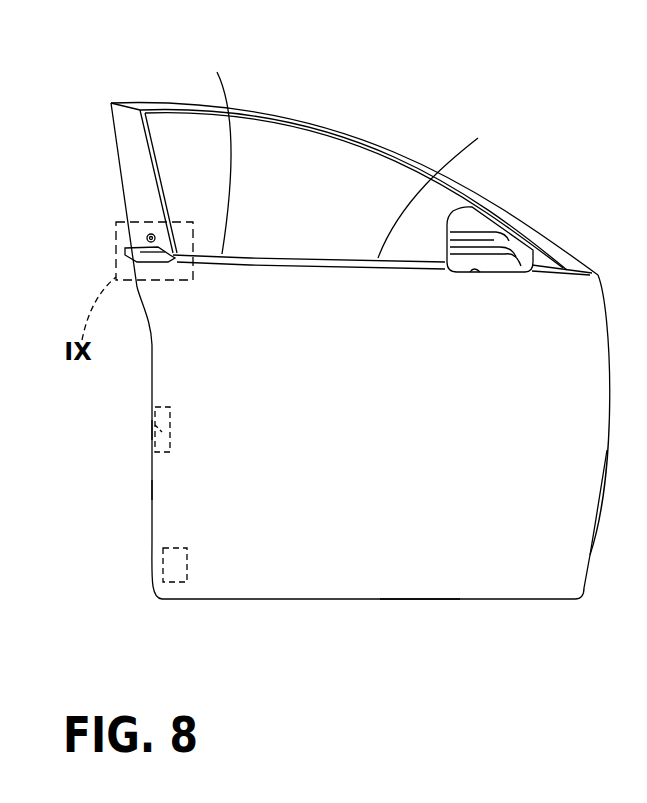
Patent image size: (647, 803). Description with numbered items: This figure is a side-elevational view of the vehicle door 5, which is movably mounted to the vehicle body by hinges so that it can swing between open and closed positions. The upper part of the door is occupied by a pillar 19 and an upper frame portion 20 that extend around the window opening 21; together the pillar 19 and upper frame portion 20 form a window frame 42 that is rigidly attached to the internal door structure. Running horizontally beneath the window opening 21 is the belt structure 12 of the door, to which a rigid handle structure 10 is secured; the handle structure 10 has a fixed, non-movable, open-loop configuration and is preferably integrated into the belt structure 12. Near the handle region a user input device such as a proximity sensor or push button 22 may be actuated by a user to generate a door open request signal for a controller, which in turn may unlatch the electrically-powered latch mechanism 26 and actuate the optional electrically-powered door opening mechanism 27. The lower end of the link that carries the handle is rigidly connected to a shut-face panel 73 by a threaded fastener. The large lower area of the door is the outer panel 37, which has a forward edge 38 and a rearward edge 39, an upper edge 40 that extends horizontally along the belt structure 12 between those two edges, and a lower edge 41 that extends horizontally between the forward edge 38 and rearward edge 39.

The vehicle door 5 is at (603, 283).
The rigid handle structure 10 is at (120, 243).
The belt structure 12 is at (216, 150).
The pillar 19 is at (128, 140).
The upper frame portion 20 is at (292, 111).
The window opening 21 is at (278, 188).
The push button 22 is at (148, 233).
The electrically-powered latch mechanism 26 is at (150, 413).
The electrically-powered door opening mechanism 27 is at (160, 563).
The outer panel 37 is at (377, 565).
The forward edge 38 is at (600, 490).
The rearward edge 39 is at (152, 490).
The upper edge 40 is at (439, 186).
The lower edge 41 is at (415, 600).
The window frame 42 is at (360, 141).
The shut-face panel 73 is at (152, 430).